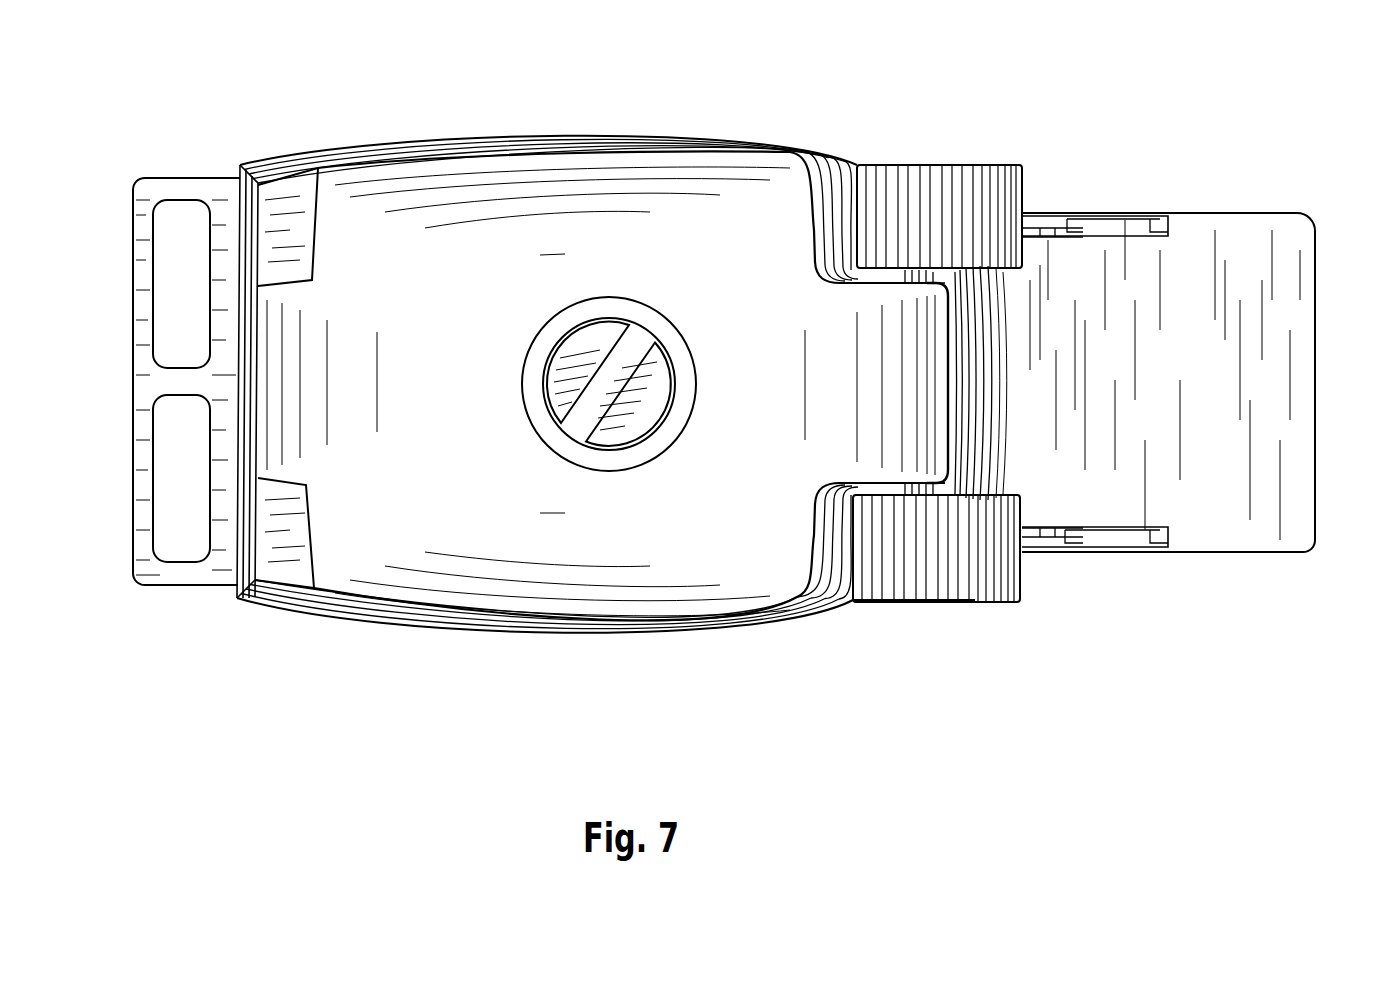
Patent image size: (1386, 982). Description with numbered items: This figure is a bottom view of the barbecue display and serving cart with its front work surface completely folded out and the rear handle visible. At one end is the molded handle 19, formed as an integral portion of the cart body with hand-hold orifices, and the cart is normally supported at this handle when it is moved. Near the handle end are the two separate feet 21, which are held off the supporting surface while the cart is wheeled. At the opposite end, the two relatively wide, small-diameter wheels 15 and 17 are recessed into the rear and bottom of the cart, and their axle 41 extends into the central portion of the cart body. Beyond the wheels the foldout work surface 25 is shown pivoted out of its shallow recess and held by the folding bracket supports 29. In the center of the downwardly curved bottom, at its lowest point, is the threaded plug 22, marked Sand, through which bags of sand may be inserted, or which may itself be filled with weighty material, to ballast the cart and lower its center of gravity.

The wheel 15 is at (997, 165).
The wheel 17 is at (993, 590).
The handle 19 is at (160, 178).
The feet 21 is at (286, 198).
The plug 22 is at (658, 393).
The foldout work surface 25 is at (1290, 283).
The folding bracket supports 29 is at (1103, 213).
The axle 41 is at (945, 272).